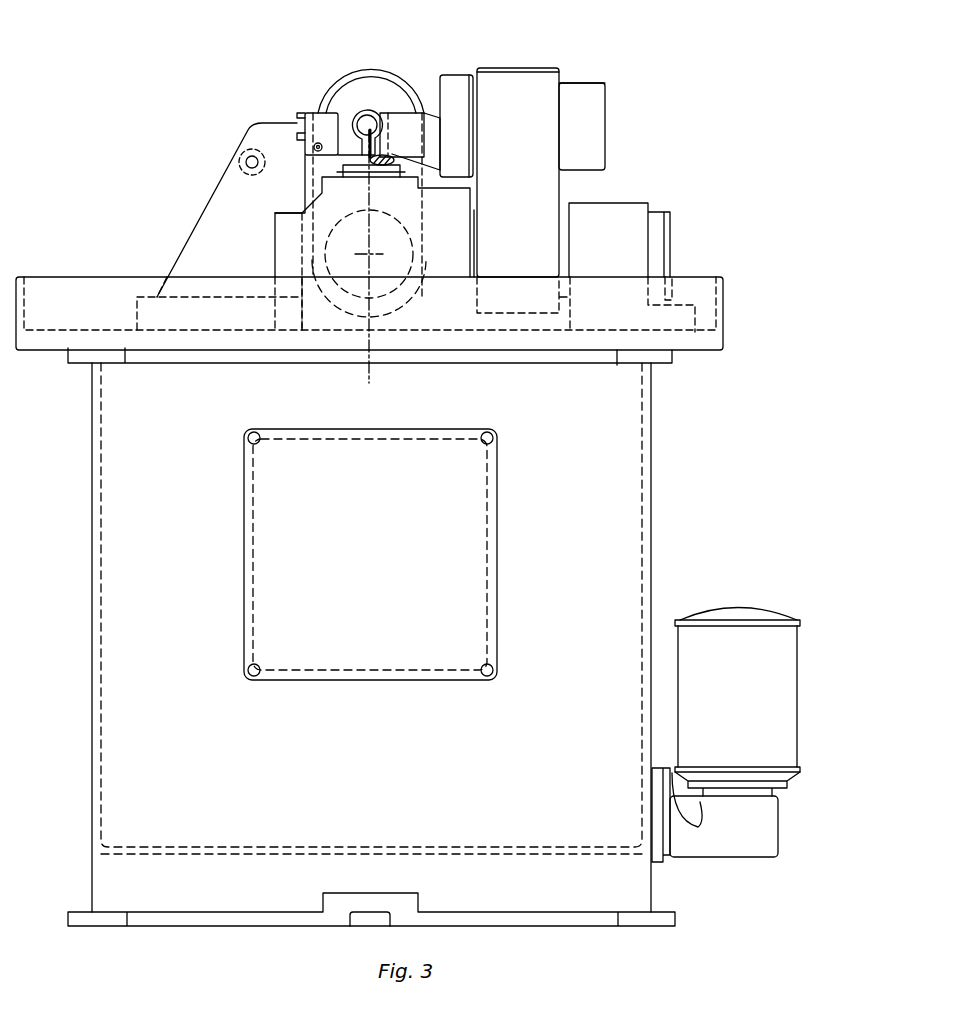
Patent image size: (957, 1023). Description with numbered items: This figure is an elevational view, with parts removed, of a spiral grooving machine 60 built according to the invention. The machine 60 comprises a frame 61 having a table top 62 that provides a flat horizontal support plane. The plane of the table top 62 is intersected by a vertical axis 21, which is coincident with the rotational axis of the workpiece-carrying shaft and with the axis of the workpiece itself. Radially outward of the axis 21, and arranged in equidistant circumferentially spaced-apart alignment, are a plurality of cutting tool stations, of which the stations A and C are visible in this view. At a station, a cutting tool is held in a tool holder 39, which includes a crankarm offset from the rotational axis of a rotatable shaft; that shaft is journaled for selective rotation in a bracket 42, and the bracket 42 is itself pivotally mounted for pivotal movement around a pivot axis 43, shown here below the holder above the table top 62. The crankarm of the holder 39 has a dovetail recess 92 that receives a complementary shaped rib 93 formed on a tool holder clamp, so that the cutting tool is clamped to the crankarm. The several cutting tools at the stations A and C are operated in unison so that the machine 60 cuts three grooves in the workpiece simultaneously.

The vertical axis 21 is at (372, 375).
The tool holder 39 is at (393, 86).
The bracket 42 is at (333, 86).
The pivot axis 43 is at (369, 256).
The spiral grooving machine 60 is at (105, 267).
The frame 61 is at (92, 482).
The table top 62 is at (94, 331).
The dovetail recess 92 is at (389, 142).
The rib 93 is at (327, 147).
The cutting tool station A is at (538, 62).
The cutting tool station C is at (379, 62).